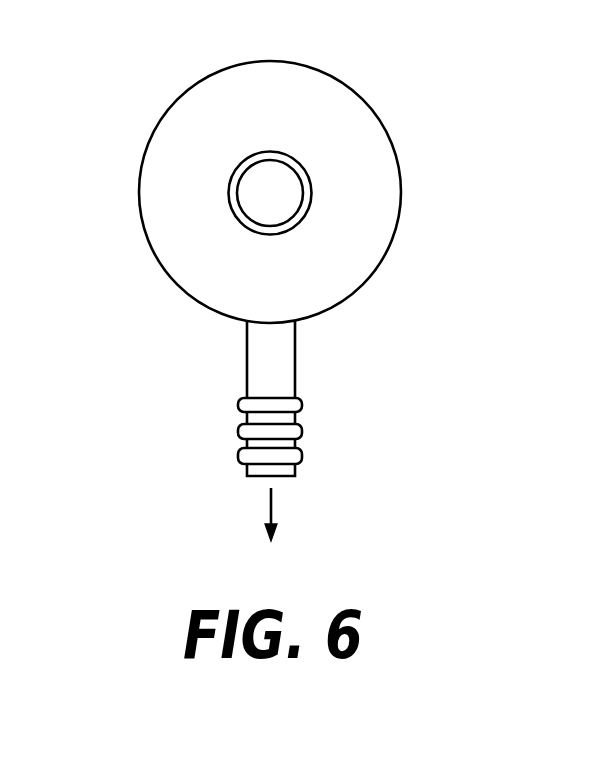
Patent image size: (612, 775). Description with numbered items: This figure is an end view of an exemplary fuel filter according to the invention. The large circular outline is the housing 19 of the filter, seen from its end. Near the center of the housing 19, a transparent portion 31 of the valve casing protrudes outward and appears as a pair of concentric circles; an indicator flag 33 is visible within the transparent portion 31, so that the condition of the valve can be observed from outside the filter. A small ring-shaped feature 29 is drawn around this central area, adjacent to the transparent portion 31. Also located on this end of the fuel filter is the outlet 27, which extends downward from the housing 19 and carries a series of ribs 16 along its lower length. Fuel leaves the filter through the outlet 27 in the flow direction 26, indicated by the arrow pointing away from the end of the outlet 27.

The housing 19 is at (363, 162).
The annular ring 29 is at (247, 159).
The indicator flag 33 is at (257, 192).
The transparent portion 31 is at (302, 211).
The outlet 27 is at (265, 353).
The ribs 16 is at (302, 405).
The flow direction 26 is at (271, 505).